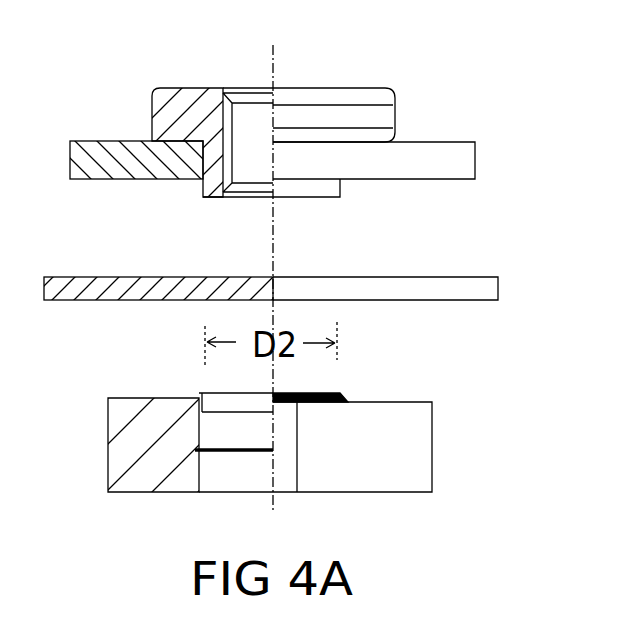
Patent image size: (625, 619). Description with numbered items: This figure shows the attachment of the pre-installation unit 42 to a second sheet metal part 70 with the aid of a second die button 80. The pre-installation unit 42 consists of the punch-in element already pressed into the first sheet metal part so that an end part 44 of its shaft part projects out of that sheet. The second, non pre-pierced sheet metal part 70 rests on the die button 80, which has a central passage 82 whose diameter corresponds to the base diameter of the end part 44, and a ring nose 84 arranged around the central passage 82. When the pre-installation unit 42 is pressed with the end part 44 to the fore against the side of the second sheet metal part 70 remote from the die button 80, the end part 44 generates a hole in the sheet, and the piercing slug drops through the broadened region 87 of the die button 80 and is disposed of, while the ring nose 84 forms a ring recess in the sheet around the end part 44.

The pre-installation unit 42 is at (472, 97).
The end part 44 is at (340, 183).
The second sheet metal part 70 is at (452, 295).
The second die button 80 is at (412, 469).
The central passage 82 is at (247, 413).
The ring nose 84 is at (198, 392).
The broadened region 87 is at (214, 430).